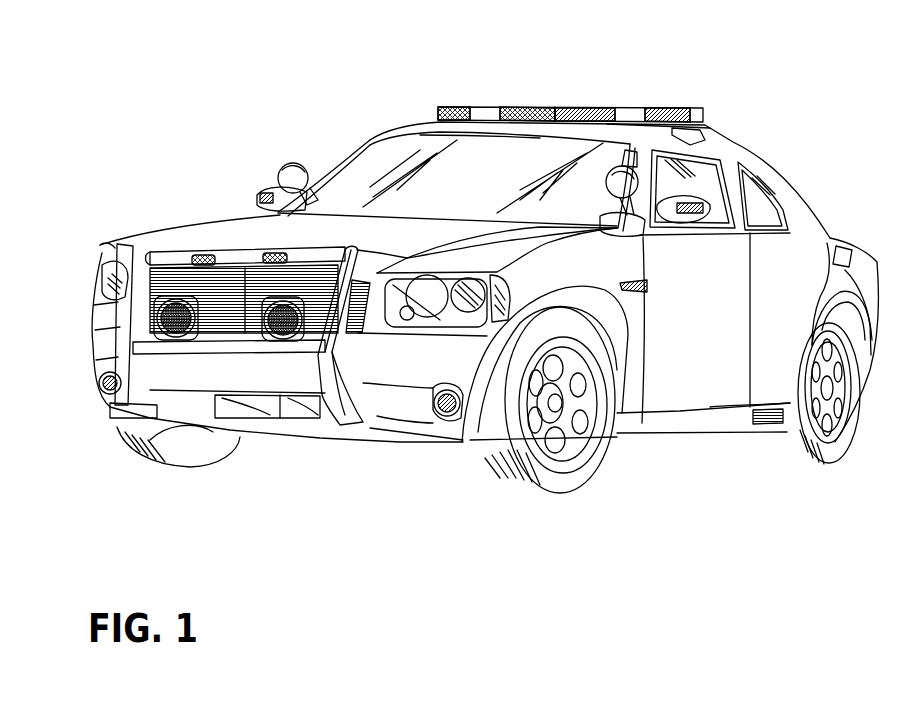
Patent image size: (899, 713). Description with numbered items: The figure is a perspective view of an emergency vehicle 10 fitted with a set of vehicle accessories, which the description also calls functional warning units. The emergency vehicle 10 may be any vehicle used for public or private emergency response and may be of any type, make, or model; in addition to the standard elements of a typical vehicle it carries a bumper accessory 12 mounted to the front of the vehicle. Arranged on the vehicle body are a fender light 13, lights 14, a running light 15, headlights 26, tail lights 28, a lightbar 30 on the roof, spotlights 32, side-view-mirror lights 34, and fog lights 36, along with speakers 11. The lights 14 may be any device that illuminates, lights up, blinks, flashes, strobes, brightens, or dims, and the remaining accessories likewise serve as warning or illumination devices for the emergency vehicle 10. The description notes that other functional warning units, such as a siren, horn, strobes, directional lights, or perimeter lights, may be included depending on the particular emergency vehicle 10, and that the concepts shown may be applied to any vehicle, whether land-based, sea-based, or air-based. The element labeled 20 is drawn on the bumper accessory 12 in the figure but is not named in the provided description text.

The emergency vehicle 10 is at (371, 122).
The speakers 11 is at (283, 342).
The bumper accessory 12 is at (121, 248).
The fender light 13 is at (652, 292).
The lights 14 is at (267, 253).
The running light 15 is at (763, 427).
The cross bar 20 is at (160, 247).
The headlights 26 is at (100, 262).
The tail lights 28 is at (877, 262).
The lightbar 30 is at (580, 105).
The spotlights 32 is at (293, 165).
The side-view-mirror lights 34 is at (260, 195).
The fog lights 36 is at (98, 397).